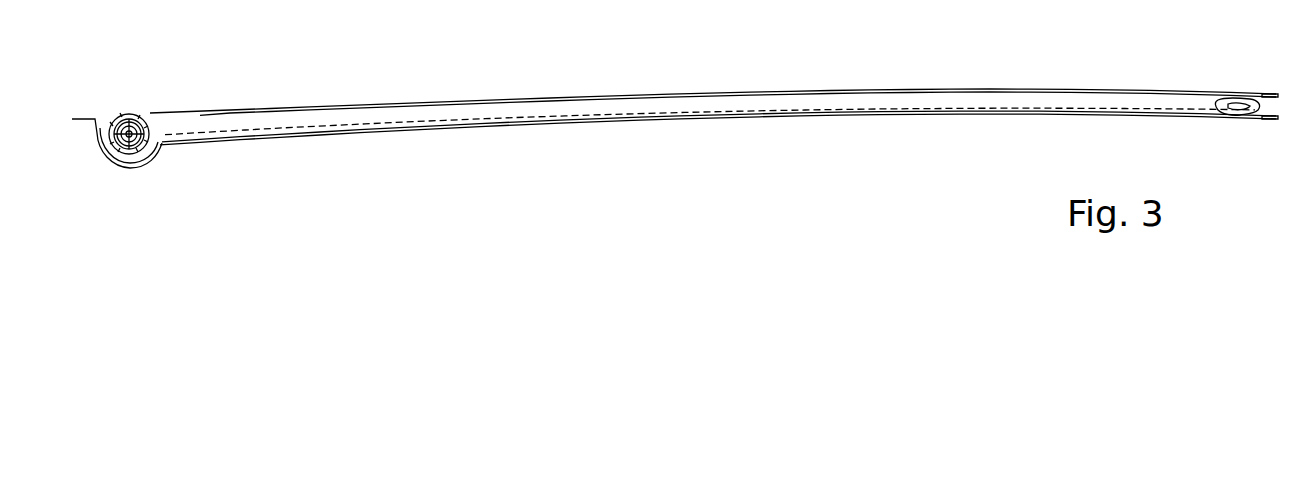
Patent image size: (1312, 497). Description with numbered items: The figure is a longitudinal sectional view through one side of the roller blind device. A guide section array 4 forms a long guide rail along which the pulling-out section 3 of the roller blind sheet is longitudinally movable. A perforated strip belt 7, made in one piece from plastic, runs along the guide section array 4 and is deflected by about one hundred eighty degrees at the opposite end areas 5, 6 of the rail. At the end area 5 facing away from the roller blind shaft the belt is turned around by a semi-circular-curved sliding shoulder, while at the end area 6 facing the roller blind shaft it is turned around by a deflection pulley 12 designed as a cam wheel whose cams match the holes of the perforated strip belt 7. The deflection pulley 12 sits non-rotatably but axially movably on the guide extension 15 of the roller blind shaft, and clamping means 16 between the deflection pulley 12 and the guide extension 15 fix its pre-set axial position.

The pulling-out section 3 is at (1243, 117).
The guide section array 4 is at (399, 134).
The end area facing away from the roller blind shaft 5 is at (1261, 93).
The end area facing the roller blind shaft 6 is at (146, 94).
The perforated strip belt 7 is at (335, 106).
The deflection pulley 12 is at (154, 133).
The guide extension 15 is at (200, 116).
The clamping means 16 is at (167, 152).